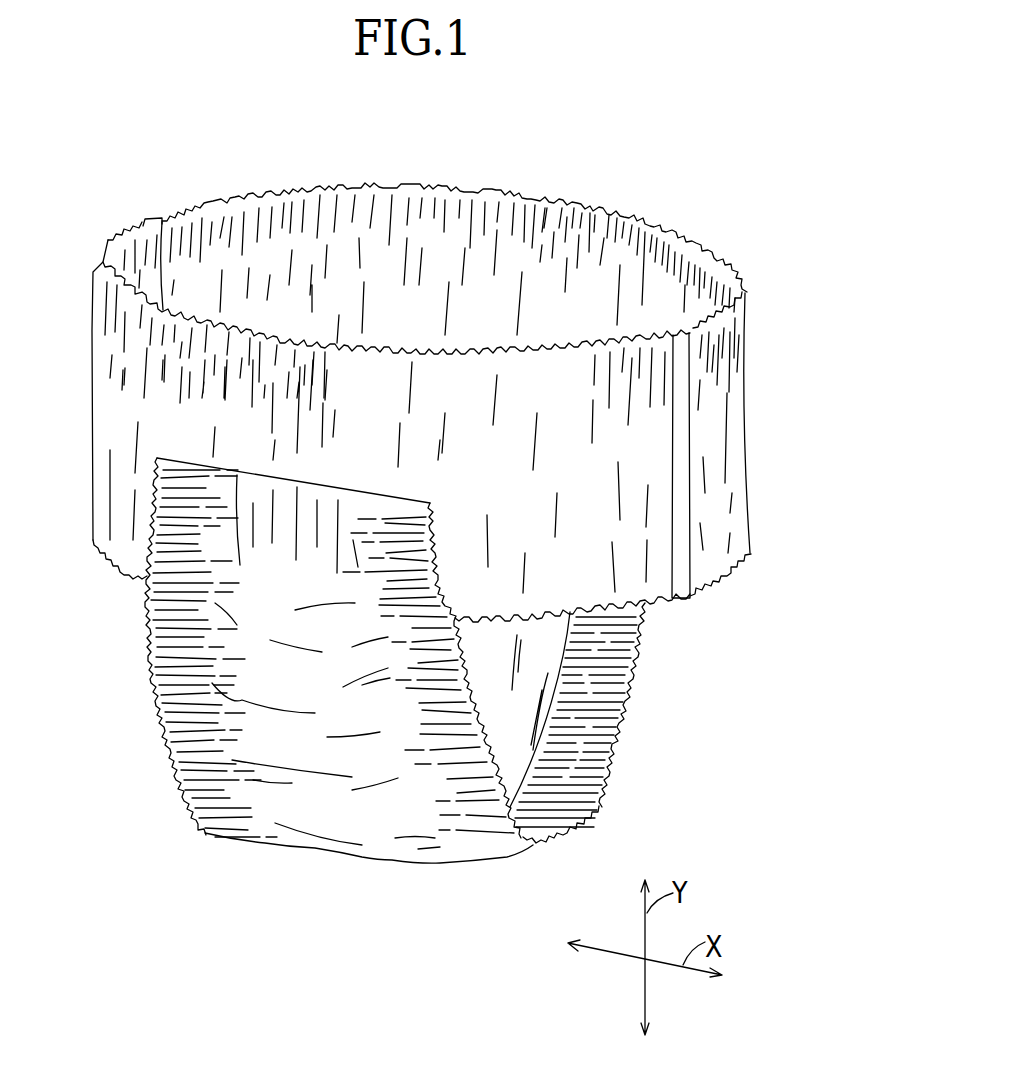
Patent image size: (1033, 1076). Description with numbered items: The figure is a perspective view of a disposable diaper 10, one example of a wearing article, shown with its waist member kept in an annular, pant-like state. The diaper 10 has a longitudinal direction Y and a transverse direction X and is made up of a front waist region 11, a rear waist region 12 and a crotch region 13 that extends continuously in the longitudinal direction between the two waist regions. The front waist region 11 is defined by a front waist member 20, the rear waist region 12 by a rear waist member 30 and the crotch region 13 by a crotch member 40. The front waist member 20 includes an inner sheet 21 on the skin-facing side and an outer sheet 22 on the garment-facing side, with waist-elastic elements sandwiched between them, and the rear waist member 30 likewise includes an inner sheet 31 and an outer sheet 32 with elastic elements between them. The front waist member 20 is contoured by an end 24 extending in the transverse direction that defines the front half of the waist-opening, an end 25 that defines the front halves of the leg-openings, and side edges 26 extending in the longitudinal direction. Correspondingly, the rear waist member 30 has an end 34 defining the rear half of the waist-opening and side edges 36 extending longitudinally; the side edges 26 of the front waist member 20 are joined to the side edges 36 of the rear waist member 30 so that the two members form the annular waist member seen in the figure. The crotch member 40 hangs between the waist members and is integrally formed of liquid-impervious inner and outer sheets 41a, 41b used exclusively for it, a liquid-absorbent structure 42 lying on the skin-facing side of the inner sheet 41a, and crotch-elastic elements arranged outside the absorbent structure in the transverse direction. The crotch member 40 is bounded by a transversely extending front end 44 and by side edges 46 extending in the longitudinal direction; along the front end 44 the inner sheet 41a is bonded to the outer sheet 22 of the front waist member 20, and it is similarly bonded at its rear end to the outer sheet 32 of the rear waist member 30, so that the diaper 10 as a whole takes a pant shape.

The diaper 10 is at (641, 139).
The front waist region 11 is at (120, 463).
The rear waist region 12 is at (658, 230).
The crotch region 13 is at (392, 827).
The front waist member 20 is at (394, 341).
The inner sheet 21 is at (130, 240).
The outer sheet 22 is at (110, 350).
The end 24 is at (333, 341).
The end 25 is at (130, 570).
The side edges 26 is at (684, 598).
The rear waist member 30 is at (535, 185).
The inner sheet 31 is at (415, 188).
The outer sheet 32 is at (730, 335).
The end 34 is at (369, 186).
The side edges 36 is at (683, 588).
The crotch member 40 is at (231, 851).
The inner sheet 41a is at (537, 817).
The outer sheet 41b is at (473, 847).
The liquid-absorbent structure 42 is at (556, 661).
The front end 44 is at (318, 478).
The side edges 46 is at (175, 777).